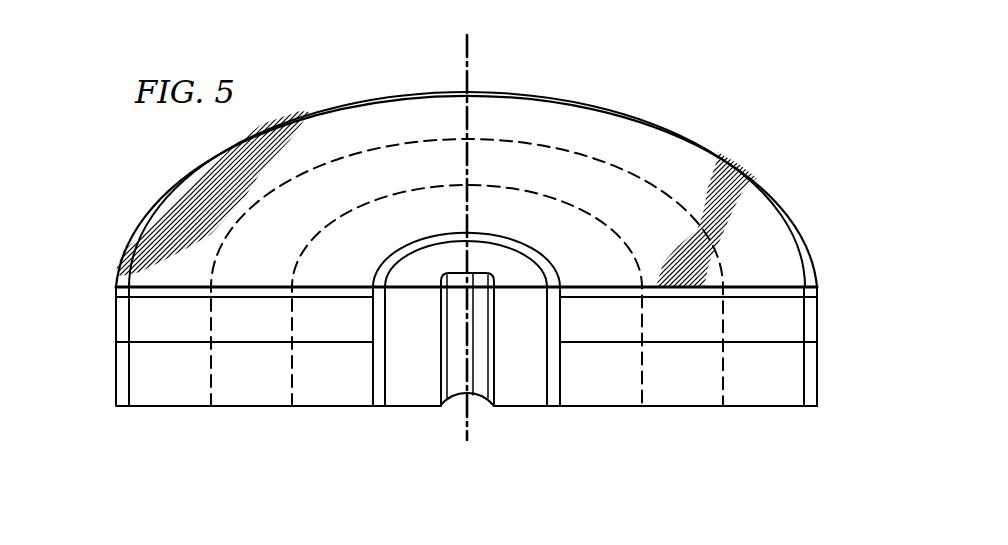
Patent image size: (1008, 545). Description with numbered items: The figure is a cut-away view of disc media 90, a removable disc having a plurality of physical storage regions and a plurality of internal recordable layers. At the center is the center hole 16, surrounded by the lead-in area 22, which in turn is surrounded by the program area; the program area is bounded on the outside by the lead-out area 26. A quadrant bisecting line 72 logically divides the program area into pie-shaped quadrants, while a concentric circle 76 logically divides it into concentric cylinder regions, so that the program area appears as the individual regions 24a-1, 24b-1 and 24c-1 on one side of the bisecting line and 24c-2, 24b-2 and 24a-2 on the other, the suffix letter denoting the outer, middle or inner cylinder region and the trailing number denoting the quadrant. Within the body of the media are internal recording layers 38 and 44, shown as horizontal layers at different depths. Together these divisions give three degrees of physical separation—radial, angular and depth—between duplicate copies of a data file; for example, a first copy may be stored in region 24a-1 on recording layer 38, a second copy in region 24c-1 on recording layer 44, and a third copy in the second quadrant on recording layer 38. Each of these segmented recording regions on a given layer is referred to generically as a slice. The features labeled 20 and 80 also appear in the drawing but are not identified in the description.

The center hole 16 is at (482, 424).
The first inner wall 20 is at (414, 397).
The lead-in area 22 is at (552, 397).
The program area region 24a-1 is at (168, 395).
The program area region 24b-1 is at (250, 395).
The program area region 24c-1 is at (333, 395).
The program area region 24c-2 is at (598, 395).
The program area region 24b-2 is at (682, 395).
The program area region 24a-2 is at (763, 395).
The lead-out area 26 is at (810, 388).
The recording layer 38 is at (147, 296).
The recording layer 44 is at (785, 342).
The quadrant bisecting line 72 is at (465, 52).
The concentric circle 76 is at (635, 175).
The inner dashed contour 80 is at (340, 217).
The media 90 is at (749, 102).